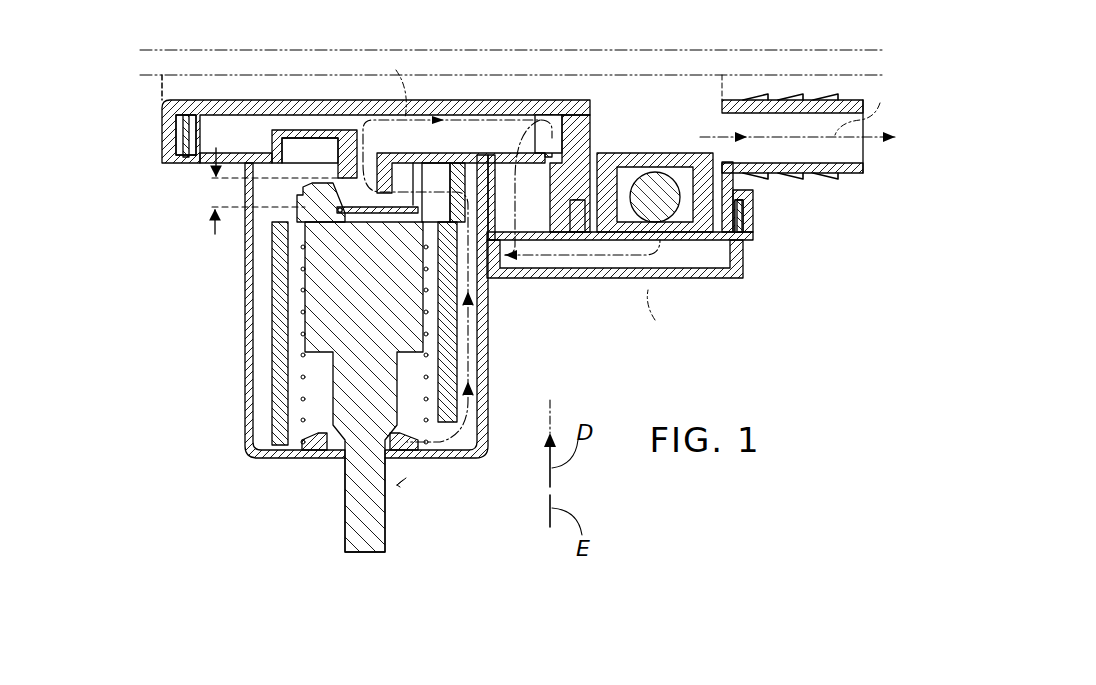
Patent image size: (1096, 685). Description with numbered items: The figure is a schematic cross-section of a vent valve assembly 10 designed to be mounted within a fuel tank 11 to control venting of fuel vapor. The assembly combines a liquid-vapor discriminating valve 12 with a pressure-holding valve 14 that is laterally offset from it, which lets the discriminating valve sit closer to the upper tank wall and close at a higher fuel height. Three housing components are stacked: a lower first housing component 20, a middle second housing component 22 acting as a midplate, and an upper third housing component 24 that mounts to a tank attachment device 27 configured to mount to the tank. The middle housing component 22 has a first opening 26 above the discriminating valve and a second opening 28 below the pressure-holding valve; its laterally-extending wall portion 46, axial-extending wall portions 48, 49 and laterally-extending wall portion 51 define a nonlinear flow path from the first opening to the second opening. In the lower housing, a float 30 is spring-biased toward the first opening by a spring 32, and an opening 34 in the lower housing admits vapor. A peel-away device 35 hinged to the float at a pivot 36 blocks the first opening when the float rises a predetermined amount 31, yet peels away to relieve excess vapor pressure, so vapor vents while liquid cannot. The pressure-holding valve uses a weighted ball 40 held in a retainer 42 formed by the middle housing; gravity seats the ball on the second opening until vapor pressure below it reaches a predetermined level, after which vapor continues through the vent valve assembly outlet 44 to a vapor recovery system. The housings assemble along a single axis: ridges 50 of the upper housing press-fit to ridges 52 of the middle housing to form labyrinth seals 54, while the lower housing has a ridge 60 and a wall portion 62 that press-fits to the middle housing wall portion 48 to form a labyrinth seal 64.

The vent valve assembly 10 is at (150, 40).
The fuel tank 11 is at (268, 48).
The liquid-vapor discriminating valve 12 is at (314, 466).
The pressure-holding valve 14 is at (633, 168).
The first housing component 20 is at (245, 400).
The second housing component 22 is at (212, 172).
The third housing component 24 is at (160, 137).
The first opening 26 is at (370, 165).
The tank attachment device 27 is at (330, 78).
The second opening 28 is at (683, 245).
The float 30 is at (364, 387).
The predetermined amount 31 is at (213, 232).
The spring 32 is at (427, 402).
The opening 34 is at (348, 455).
The peel-away device 35 is at (360, 215).
The pivot 36 is at (340, 213).
The weighted ball 40 is at (655, 197).
The retainer 42 is at (700, 127).
The vent valve assembly outlet 44 is at (866, 150).
The laterally-extending wall portion 46 is at (418, 118).
The axial-extending wall portion 48 is at (470, 198).
The axial-extending wall portion 49 is at (515, 230).
The ridges 50 is at (185, 150).
The laterally-extending wall portion 51 is at (655, 225).
The ridges 52 is at (173, 133).
The labyrinth seals 54 is at (210, 135).
The ridge 60 is at (507, 252).
The wall portion 62 is at (490, 275).
The labyrinth seal 64 is at (530, 262).